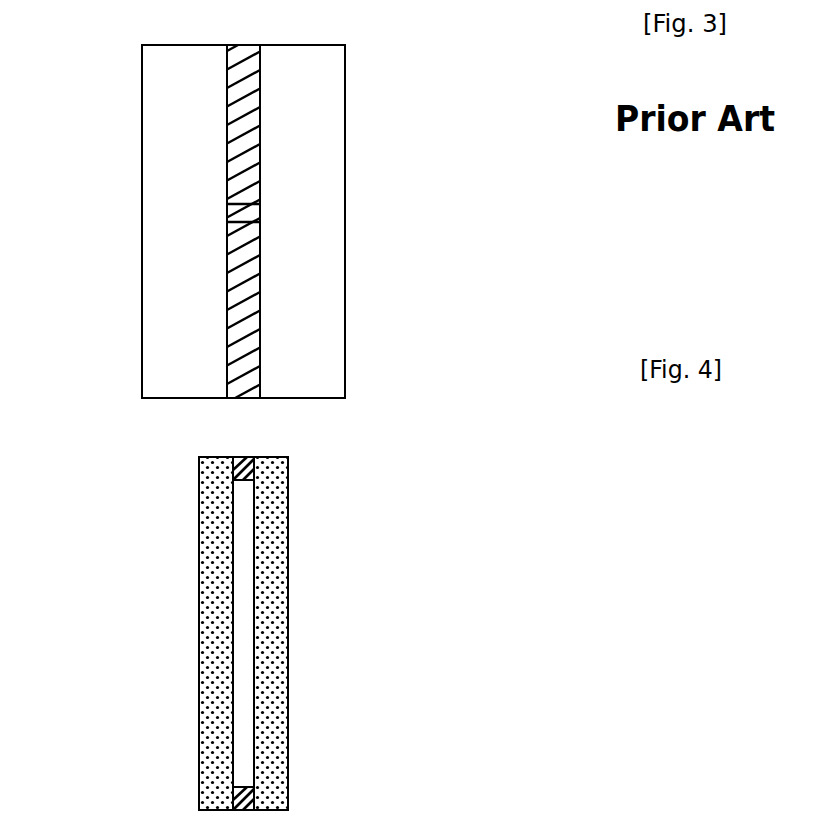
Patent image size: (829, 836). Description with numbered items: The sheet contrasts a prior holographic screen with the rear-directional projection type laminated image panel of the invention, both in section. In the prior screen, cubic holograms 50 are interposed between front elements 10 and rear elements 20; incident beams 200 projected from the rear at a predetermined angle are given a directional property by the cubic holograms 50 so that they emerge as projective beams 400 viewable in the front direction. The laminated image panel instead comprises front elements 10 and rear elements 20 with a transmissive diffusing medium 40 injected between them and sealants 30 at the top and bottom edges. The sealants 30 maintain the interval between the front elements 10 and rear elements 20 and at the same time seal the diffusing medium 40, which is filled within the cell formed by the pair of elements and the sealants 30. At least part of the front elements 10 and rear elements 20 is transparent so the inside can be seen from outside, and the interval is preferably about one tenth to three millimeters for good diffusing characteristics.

In FIG. 3, the front elements 10 is at (142, 122).
In FIG. 4, the front elements 10 is at (212, 613).
In FIG. 3, the rear elements 20 is at (345, 137).
In FIG. 4, the rear elements 20 is at (277, 607).
In FIG. 3, the cubic holograms 50 is at (255, 304).
In FIG. 3, the projective beams 400 is at (238, 208).
In FIG. 3, the incident beams 200 is at (255, 203).
In FIG. 4, the sealants 30 is at (253, 457).
In FIG. 4, the transmissive diffusing medium 40 is at (242, 707).